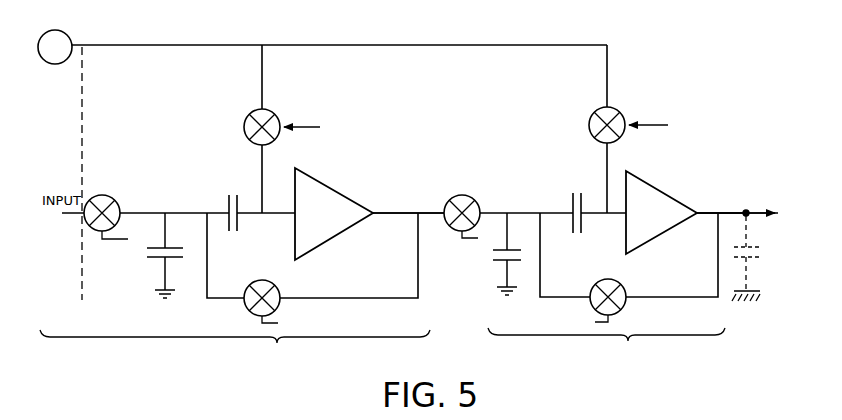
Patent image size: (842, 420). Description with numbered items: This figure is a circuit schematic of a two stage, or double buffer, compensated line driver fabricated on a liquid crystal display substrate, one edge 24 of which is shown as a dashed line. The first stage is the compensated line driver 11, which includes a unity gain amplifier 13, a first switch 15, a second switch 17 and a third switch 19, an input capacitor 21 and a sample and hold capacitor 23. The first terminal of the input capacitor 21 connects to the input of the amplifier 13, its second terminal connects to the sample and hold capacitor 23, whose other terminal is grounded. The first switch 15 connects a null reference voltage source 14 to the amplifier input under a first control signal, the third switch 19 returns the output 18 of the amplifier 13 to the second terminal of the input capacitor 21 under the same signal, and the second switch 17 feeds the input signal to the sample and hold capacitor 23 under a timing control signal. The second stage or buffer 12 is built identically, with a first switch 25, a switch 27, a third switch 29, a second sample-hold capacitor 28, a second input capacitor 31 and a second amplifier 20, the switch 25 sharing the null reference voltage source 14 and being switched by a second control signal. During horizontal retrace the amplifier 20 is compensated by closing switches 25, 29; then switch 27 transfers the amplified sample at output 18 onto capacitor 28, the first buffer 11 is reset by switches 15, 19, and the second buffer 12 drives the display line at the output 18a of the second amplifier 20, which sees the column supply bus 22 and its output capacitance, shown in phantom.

The compensated line driver 11 is at (235, 348).
The second stage or buffer 12 is at (606, 345).
The unity gain amplifier 13 is at (340, 190).
The null reference voltage source 14 is at (58, 30).
The first switch 15 is at (272, 112).
The second switch 17 is at (112, 197).
The output of the amplifier 18 is at (386, 211).
The output of the second amplifier 18a is at (728, 211).
The third switch 19 is at (279, 304).
The second amplifier 20 is at (672, 196).
The input capacitor 21 is at (228, 194).
The column supply bus 22 is at (751, 218).
The sample and hold capacitor 23 is at (160, 257).
The edge of the liquid crystal display substrate 24 is at (86, 118).
The first switch of the second buffer 25 is at (620, 112).
The switch of the second buffer 27 is at (469, 197).
The second sample-hold capacitor 28 is at (497, 261).
The third switch of the second buffer 29 is at (624, 304).
The second input capacitor 31 is at (571, 196).